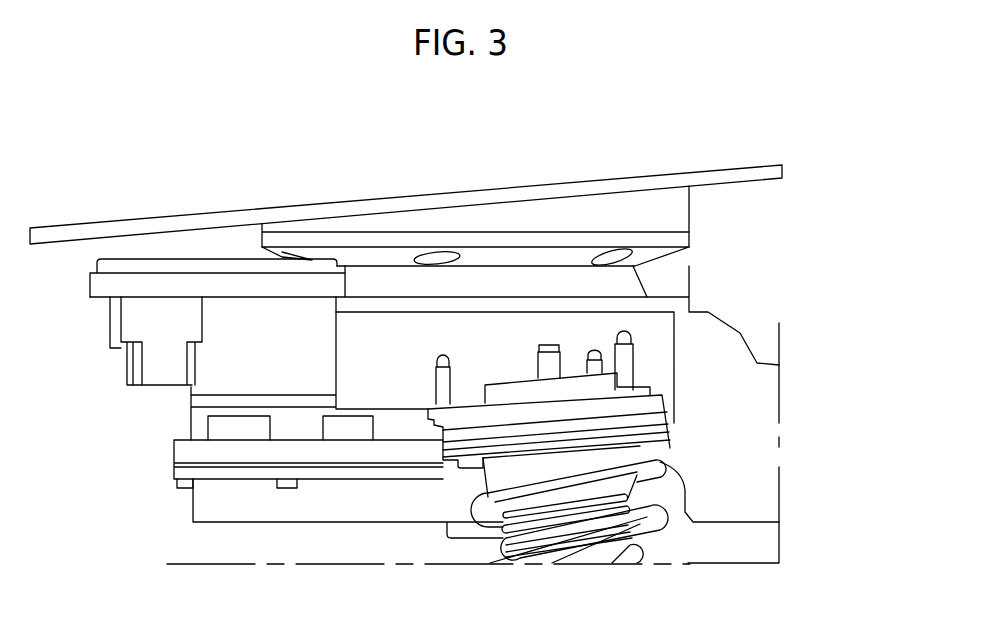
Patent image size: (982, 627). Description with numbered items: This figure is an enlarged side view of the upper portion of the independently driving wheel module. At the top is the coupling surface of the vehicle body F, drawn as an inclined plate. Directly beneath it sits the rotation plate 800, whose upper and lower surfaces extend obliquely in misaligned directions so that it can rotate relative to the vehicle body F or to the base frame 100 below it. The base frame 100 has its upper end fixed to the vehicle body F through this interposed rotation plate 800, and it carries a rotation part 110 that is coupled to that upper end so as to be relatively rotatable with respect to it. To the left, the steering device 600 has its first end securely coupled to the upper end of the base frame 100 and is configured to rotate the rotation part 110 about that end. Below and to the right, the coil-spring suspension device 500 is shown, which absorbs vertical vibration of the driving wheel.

The vehicle body F is at (782, 172).
The rotation plate 800 is at (678, 208).
The base frame 100 is at (680, 240).
The rotation part 110 is at (684, 300).
The steering device 600 is at (247, 322).
The suspension device 500 is at (593, 455).